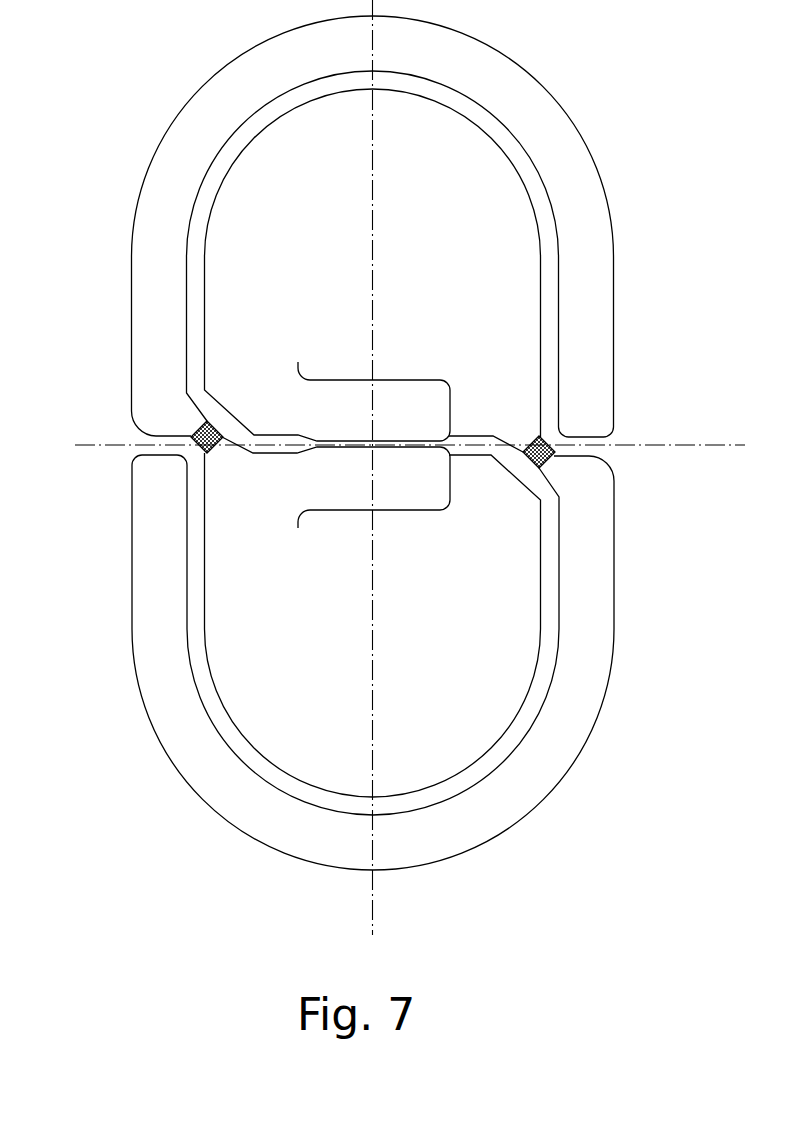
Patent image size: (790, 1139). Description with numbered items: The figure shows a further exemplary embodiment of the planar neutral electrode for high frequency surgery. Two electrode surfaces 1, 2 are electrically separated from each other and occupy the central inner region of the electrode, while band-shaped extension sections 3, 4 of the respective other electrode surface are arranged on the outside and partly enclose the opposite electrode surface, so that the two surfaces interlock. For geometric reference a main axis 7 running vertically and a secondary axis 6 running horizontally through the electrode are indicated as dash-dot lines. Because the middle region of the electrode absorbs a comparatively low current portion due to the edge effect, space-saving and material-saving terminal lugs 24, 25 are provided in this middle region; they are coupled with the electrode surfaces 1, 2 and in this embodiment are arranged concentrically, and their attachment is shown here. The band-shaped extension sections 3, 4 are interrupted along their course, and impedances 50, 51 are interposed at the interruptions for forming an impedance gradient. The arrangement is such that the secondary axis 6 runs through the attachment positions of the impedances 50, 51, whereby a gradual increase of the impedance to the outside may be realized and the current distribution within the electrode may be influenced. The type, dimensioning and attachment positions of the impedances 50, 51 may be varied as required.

The electrode surface 1 is at (414, 272).
The electrode surface 2 is at (406, 666).
The band-shaped extension section 3 is at (515, 797).
The band-shaped extension section 4 is at (567, 183).
The secondary axis 6 is at (614, 442).
The main axis 7 is at (374, 912).
The terminal lug 24 is at (428, 408).
The terminal lug 25 is at (425, 492).
The impedance 50 is at (556, 455).
The impedance 51 is at (190, 432).